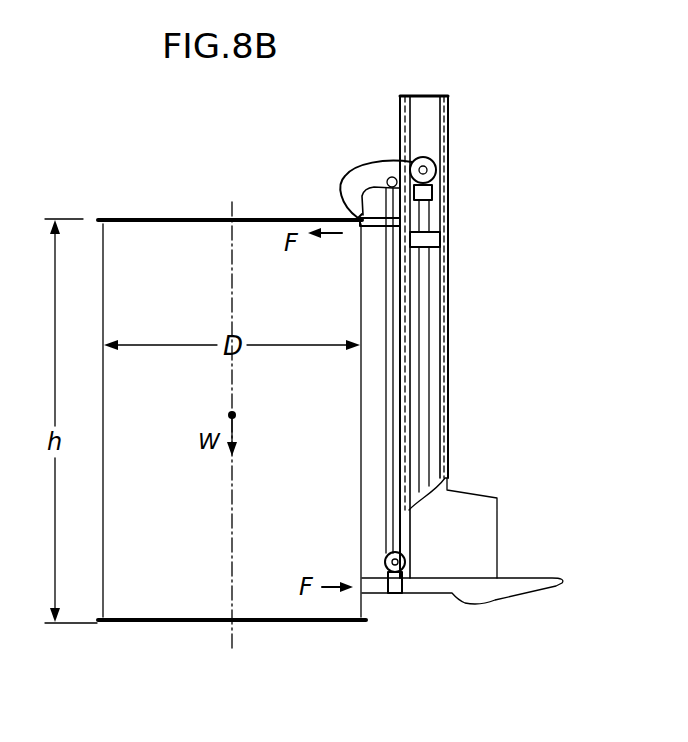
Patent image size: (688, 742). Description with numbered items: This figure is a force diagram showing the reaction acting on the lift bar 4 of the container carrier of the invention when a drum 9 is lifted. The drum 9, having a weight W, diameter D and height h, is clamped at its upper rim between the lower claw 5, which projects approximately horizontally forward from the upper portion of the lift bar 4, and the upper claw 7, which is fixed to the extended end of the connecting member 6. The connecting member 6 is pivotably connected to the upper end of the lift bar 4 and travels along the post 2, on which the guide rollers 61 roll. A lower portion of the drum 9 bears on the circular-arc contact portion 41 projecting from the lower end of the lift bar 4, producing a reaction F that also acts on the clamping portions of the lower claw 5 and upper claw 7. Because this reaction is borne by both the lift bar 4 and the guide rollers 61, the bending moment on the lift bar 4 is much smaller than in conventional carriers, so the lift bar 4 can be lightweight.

The post 2 is at (448, 112).
The lift bar 4 is at (392, 366).
The lower claw 5 is at (370, 228).
The connecting member 6 is at (366, 170).
The upper claw 7 is at (348, 200).
The drum 9 is at (178, 250).
The contact portion 41 is at (377, 588).
The guide rollers 61 is at (448, 162).